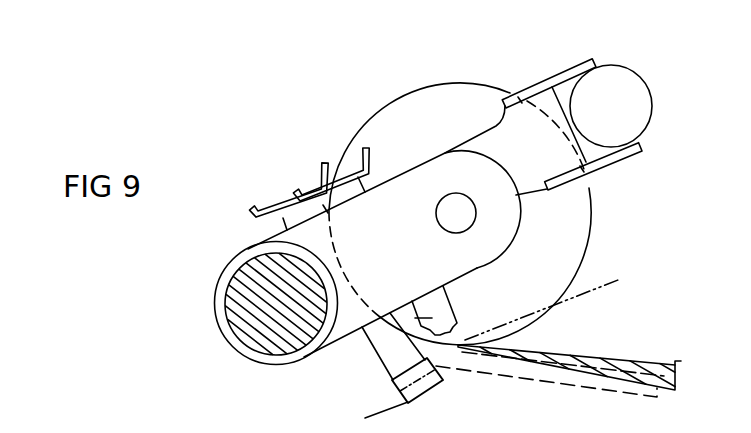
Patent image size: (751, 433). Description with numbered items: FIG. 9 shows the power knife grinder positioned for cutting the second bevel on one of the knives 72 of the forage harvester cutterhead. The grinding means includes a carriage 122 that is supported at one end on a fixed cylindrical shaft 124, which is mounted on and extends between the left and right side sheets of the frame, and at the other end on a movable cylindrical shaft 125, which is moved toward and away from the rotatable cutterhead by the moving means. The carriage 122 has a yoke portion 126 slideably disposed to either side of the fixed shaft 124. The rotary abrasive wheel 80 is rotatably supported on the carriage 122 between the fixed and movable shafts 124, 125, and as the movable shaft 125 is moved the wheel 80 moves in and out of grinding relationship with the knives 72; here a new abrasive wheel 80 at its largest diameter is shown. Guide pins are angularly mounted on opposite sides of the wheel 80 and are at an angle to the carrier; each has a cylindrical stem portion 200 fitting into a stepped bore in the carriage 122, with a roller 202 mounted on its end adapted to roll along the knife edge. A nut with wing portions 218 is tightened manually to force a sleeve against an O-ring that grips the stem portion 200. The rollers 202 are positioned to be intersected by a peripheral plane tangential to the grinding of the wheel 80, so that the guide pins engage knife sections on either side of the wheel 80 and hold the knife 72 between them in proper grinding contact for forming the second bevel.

The knife 72 is at (681, 364).
The abrasive wheel 80 is at (394, 111).
The carriage 122 is at (445, 153).
The fixed cylindrical shaft 124 is at (648, 98).
The movable cylindrical shaft 125 is at (240, 290).
The yoke portion 126 is at (575, 62).
The stem portion 200 is at (376, 342).
The roller 202 is at (393, 381).
The wing portions 218 is at (357, 157).